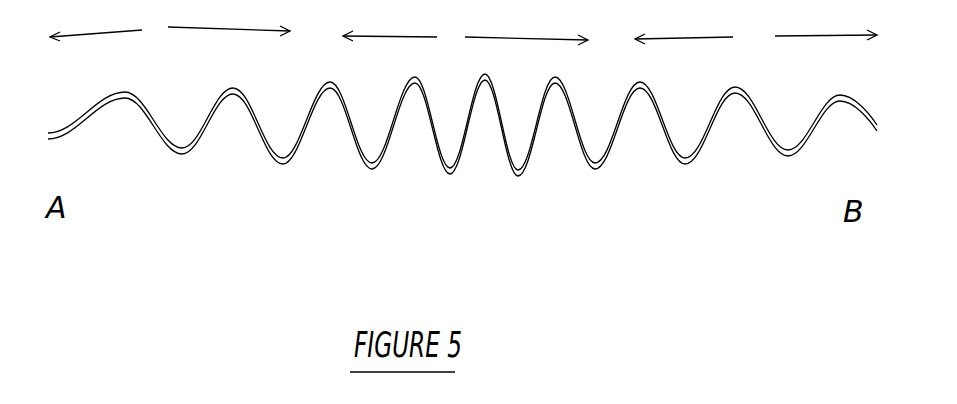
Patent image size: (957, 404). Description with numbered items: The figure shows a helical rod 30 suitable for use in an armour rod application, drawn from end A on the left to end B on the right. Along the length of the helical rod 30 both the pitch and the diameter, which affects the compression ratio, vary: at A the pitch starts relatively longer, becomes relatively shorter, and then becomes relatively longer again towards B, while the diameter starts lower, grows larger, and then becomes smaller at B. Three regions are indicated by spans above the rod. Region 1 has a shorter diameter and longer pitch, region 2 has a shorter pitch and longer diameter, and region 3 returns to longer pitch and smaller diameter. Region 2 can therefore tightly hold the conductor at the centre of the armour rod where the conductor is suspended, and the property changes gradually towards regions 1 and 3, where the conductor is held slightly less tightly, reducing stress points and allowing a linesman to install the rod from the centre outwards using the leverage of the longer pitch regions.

The region 1 is at (170, 29).
The region 2 is at (465, 36).
The region 3 is at (756, 36).
The helical rod 30 is at (520, 177).